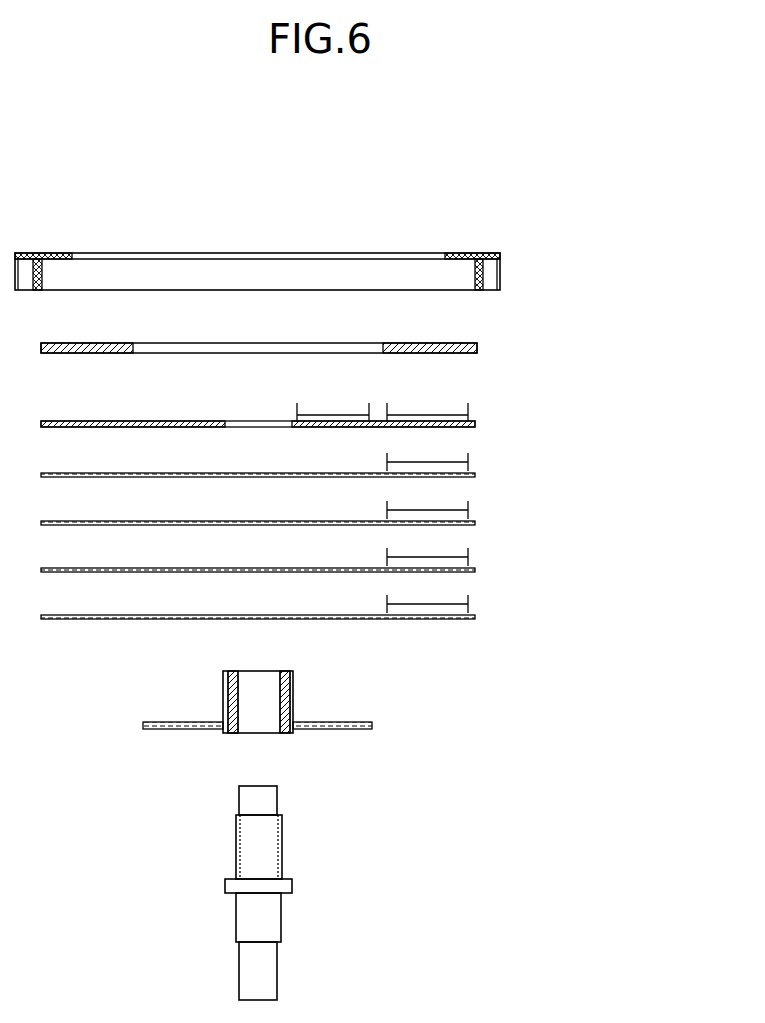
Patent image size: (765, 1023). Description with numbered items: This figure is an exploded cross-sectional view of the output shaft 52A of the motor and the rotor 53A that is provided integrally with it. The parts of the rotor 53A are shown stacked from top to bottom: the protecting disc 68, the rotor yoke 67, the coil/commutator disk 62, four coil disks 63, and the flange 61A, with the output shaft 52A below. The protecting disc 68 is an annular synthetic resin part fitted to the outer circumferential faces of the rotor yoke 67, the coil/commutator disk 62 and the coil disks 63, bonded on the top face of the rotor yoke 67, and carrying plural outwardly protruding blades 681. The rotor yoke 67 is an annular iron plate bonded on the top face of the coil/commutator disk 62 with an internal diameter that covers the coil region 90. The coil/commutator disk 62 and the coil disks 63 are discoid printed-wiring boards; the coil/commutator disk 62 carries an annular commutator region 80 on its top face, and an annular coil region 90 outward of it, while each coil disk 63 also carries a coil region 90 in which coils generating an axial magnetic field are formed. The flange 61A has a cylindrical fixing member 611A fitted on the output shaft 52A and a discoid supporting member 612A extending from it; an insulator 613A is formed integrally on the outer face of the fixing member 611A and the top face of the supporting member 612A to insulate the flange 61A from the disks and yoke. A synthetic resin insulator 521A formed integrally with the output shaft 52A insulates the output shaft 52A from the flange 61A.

The protecting disc 68 is at (562, 259).
The blades 681 is at (490, 274).
The rotor yoke 67 is at (562, 341).
The coil/commutator disk 62 is at (562, 419).
The coil disks 63 is at (562, 471).
The commutator region 80 is at (333, 407).
The coil region 90 is at (427, 503).
The rotor 53A is at (650, 252).
The flange 61A is at (392, 699).
The fixing member 611A is at (290, 672).
The insulator 613A is at (293, 700).
The supporting member 612A is at (350, 728).
The output shaft 52A is at (433, 893).
The insulator 521A is at (286, 878).